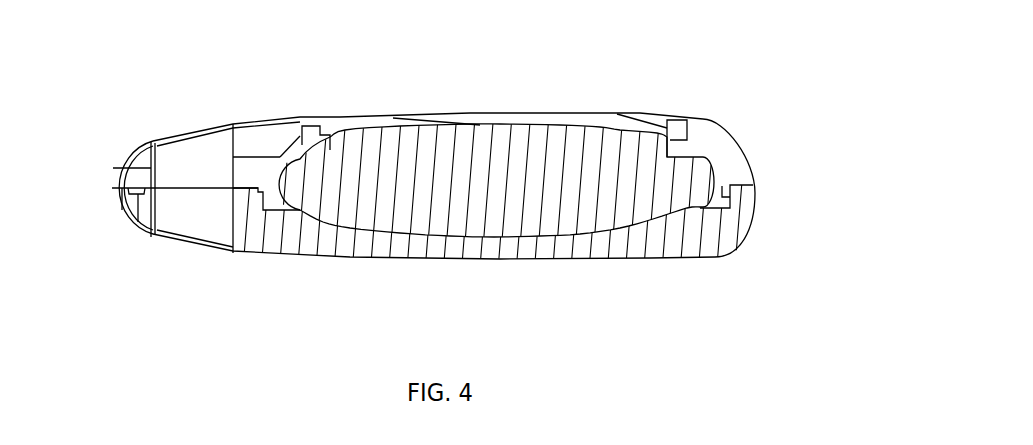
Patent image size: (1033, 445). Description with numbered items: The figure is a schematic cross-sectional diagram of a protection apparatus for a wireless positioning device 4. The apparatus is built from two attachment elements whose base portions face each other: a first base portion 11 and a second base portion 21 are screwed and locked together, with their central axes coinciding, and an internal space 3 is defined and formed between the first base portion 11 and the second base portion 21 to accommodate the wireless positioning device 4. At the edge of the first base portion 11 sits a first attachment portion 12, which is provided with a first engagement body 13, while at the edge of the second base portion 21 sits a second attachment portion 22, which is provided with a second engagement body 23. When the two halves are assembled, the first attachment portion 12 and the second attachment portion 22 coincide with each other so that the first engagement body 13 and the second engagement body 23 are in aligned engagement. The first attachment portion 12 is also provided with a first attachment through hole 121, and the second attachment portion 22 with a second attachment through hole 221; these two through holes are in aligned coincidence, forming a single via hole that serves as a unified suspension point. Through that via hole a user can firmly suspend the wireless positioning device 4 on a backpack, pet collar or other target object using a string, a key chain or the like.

The first base portion 11 is at (740, 160).
The first attachment portion 12 is at (145, 157).
The first attachment through hole 121 is at (207, 150).
The first engagement body 13 is at (122, 165).
The second base portion 21 is at (720, 232).
The second attachment portion 22 is at (147, 190).
The second attachment through hole 221 is at (200, 217).
The second engagement body 23 is at (133, 192).
The internal space 3 is at (683, 150).
The wireless positioning device 4 is at (485, 208).